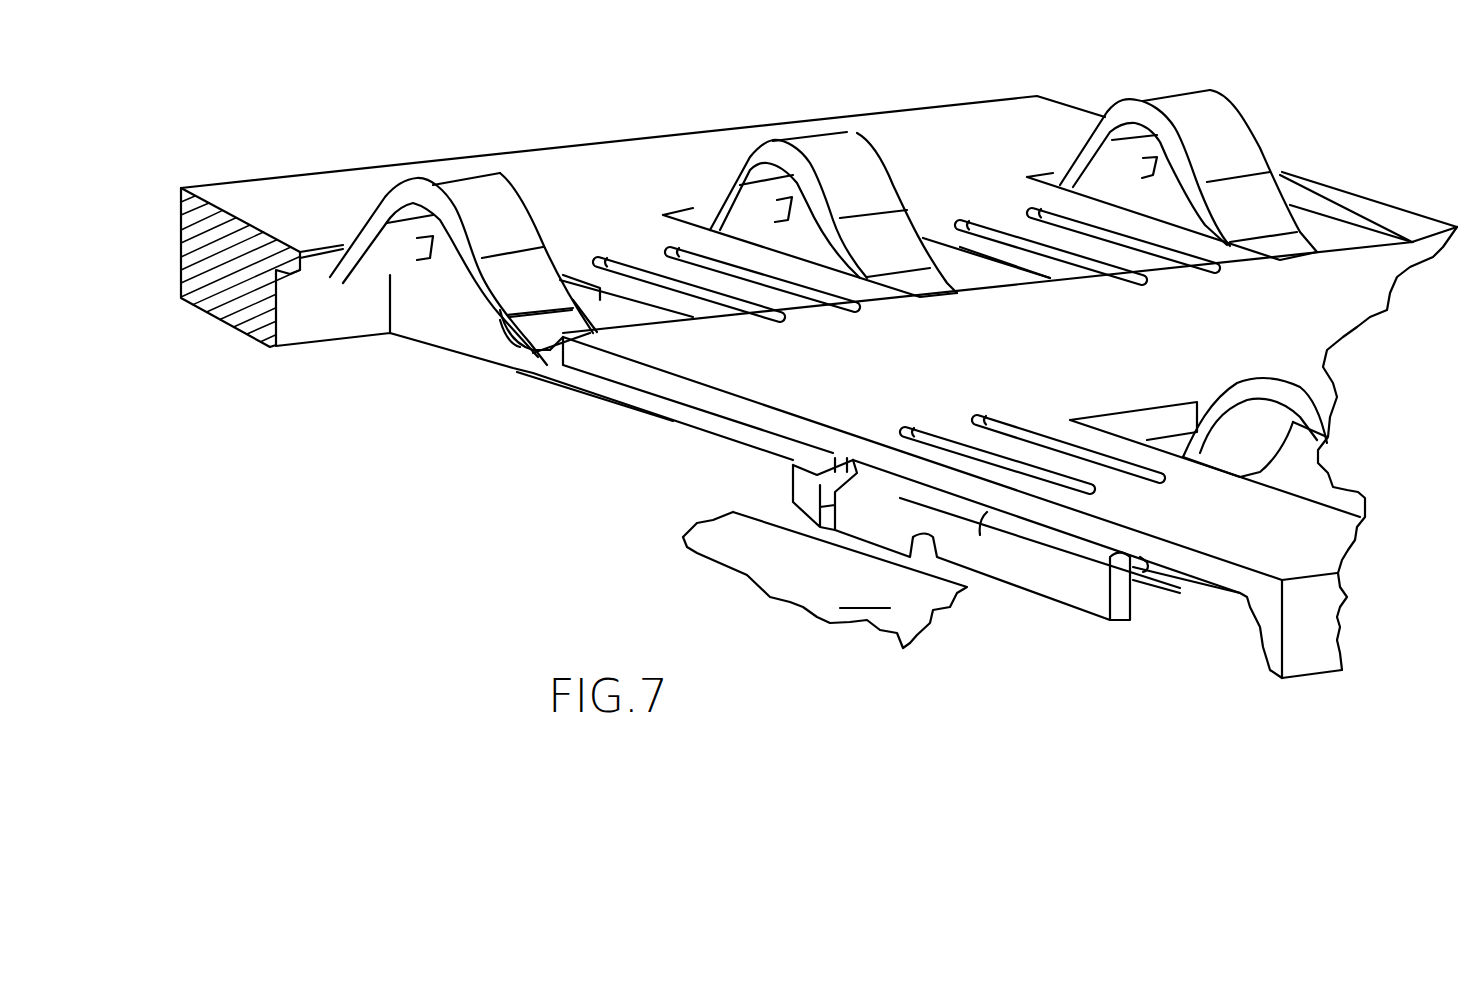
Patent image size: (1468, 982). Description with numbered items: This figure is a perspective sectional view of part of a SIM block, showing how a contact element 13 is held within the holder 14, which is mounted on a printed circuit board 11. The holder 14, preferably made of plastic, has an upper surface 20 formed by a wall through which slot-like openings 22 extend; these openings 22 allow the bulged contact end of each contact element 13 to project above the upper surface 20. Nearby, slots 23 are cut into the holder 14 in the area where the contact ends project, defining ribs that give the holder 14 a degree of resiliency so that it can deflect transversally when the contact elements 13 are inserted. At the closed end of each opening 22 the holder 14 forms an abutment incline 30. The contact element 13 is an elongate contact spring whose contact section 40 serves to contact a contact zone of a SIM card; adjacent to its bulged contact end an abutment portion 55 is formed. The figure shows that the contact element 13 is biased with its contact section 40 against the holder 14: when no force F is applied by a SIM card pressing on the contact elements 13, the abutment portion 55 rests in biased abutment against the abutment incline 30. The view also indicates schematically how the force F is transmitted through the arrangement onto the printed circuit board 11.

The upper surface 20 is at (819, 387).
The abutment portion 55 is at (385, 258).
The slot-like openings 22 is at (447, 335).
The slots 23 is at (942, 440).
The contact element 13 is at (518, 345).
The holder 14 is at (202, 310).
The abutment incline 30 is at (300, 268).
The contact section 40 is at (323, 283).
The printed circuit board 11 is at (940, 615).
The force F is at (438, 178).